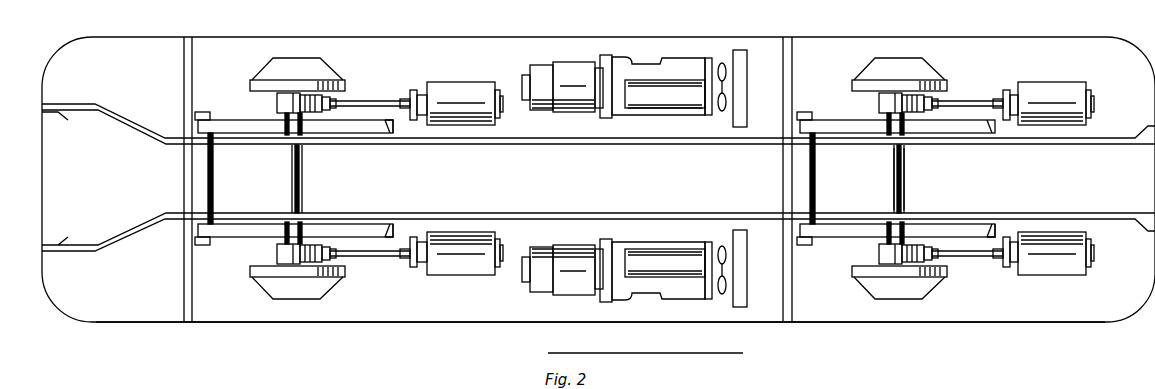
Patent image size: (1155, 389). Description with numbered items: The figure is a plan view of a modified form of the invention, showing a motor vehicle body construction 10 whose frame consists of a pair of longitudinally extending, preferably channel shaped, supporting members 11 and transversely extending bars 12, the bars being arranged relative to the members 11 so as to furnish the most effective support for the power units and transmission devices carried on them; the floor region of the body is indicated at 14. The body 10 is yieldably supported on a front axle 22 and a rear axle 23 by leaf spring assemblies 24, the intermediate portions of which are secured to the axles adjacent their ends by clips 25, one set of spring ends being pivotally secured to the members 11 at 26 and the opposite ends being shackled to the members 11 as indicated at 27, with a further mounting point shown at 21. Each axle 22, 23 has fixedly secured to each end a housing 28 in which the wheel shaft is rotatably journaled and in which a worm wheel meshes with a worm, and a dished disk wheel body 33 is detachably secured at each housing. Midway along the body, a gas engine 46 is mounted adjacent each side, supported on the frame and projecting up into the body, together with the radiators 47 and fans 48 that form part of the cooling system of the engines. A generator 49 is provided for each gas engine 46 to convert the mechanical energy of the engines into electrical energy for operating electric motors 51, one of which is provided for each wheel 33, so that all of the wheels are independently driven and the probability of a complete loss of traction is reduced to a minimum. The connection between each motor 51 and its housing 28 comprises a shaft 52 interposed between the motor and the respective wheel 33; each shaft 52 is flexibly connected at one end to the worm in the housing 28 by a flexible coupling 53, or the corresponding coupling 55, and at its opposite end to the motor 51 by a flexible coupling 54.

The body construction 10 is at (1066, 37).
The supporting members 11 is at (1064, 213).
The transversely extending bars 12 is at (184, 156).
The floor 14 is at (905, 322).
The bracket 21 is at (395, 128).
The front axle 22 is at (906, 178).
The rear axle 23 is at (305, 182).
The leaf spring assemblies 24 is at (378, 126).
The clips 25 is at (906, 150).
The pivotal connection 26 is at (214, 160).
The shackle connection 27 is at (386, 226).
The housing 28 is at (277, 103).
The dished disk wheel body 33 is at (335, 67).
The gas engine 46 is at (632, 75).
The radiator 47 is at (740, 92).
The fan 48 is at (718, 108).
The generator 49 is at (566, 62).
The electric motor 51 is at (460, 90).
The shaft 52 is at (380, 100).
The flexible coupling 53 is at (331, 99).
The flexible coupling 54 is at (414, 90).
The gear unit 55 is at (938, 96).